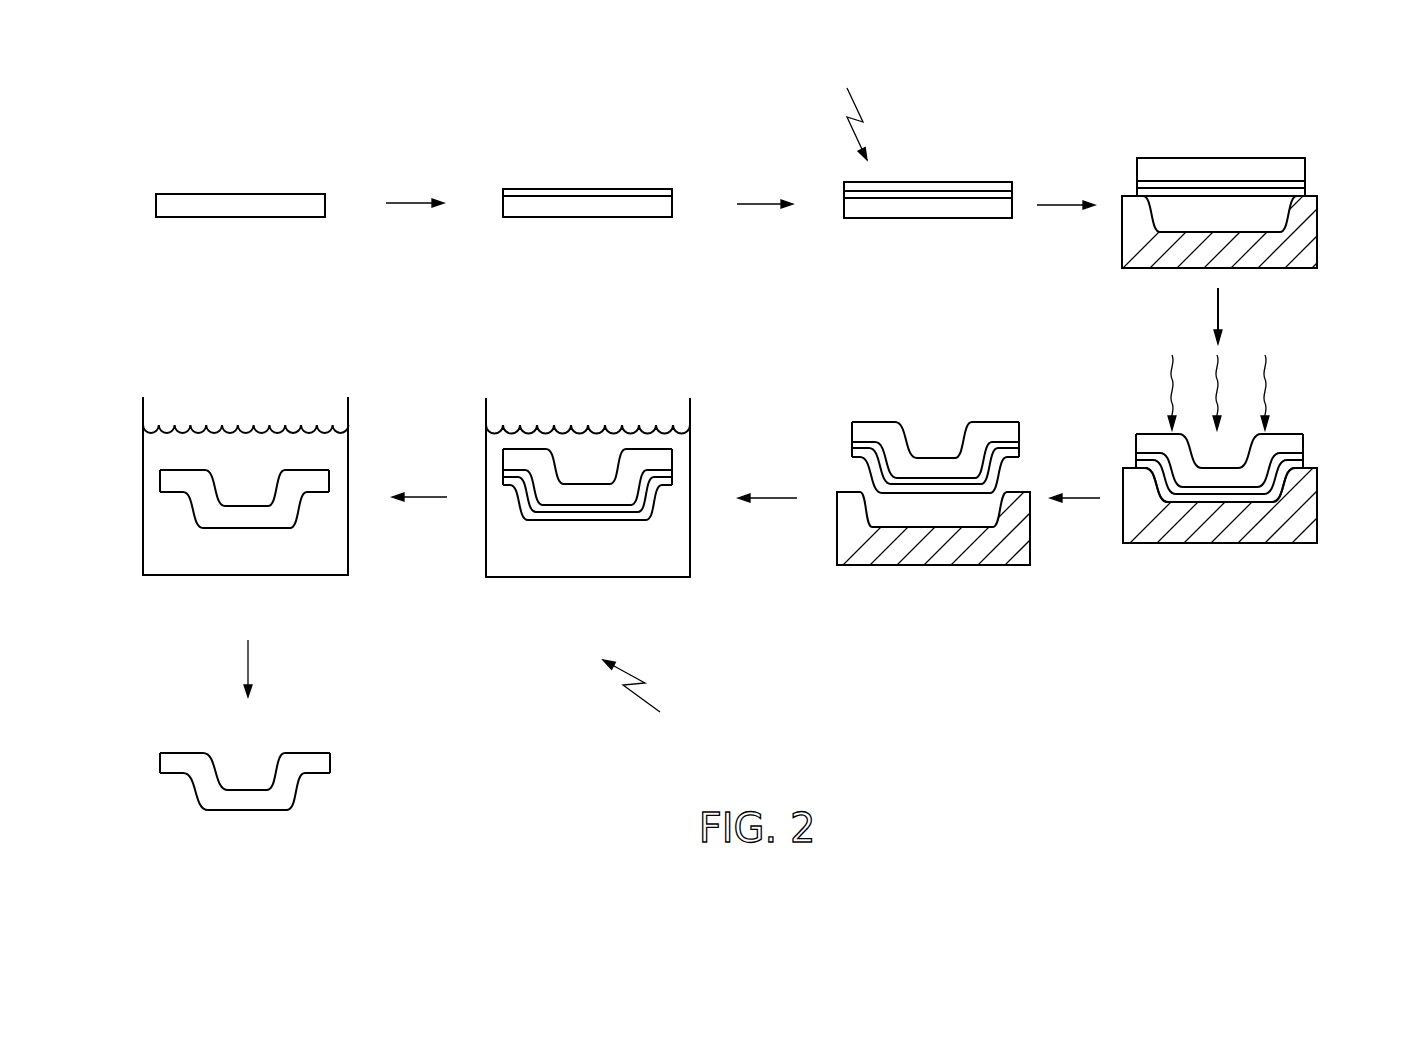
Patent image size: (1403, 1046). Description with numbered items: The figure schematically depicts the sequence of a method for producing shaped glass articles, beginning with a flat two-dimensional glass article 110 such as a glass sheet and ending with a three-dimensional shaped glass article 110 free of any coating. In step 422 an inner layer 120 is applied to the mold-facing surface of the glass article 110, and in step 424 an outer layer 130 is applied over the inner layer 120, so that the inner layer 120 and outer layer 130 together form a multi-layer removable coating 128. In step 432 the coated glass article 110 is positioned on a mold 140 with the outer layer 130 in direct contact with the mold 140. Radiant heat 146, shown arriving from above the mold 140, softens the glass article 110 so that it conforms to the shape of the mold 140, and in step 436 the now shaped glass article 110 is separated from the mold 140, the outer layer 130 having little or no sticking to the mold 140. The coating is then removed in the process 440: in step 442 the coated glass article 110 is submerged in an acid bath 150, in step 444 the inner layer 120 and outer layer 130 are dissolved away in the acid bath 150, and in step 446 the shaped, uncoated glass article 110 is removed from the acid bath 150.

The glass article 110 is at (233, 217).
The inner layer 120 is at (588, 189).
The outer layer 130 is at (935, 182).
The mold 140 is at (1317, 246).
The acid bath 150 is at (348, 415).
The radiant heat 146 is at (1171, 382).
The multi-layer removable coating 128 is at (842, 109).
The step of applying the inner layer 422 is at (408, 203).
The step of applying the outer layer 424 is at (757, 204).
The step of positioning the glass article on the mold 432 is at (1057, 205).
The step of separating the glass article from the mold 436 is at (1083, 498).
The step of removing the multi-layer coating 440 is at (657, 696).
The step of submerging in the acid bath 442 is at (775, 498).
The step of dissolving the layers 444 is at (420, 497).
The step of removing the glass article from the acid bath 446 is at (248, 660).